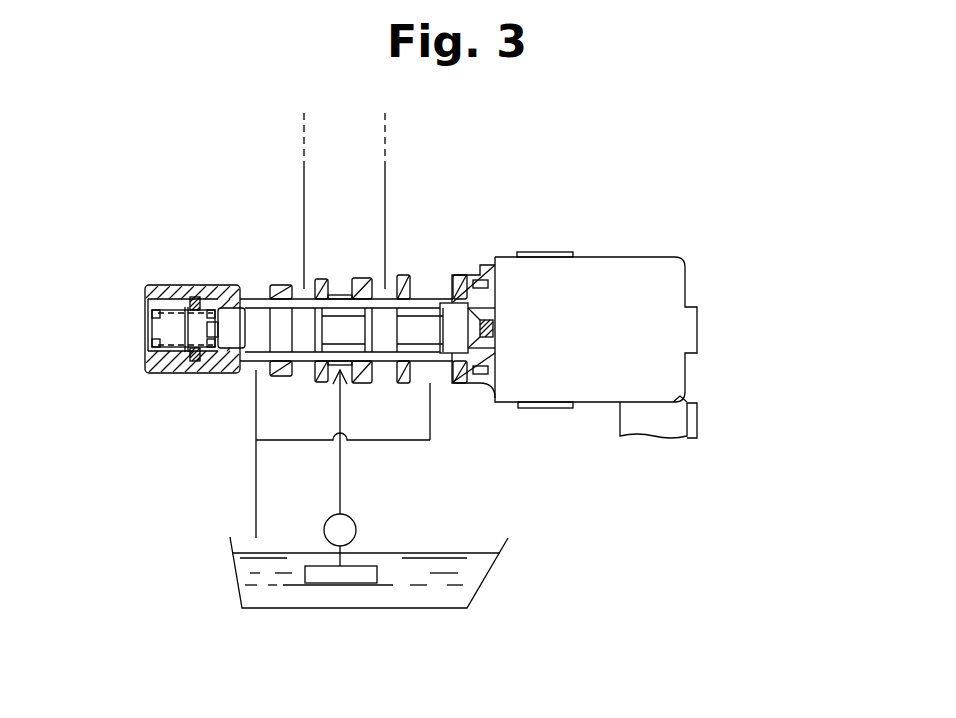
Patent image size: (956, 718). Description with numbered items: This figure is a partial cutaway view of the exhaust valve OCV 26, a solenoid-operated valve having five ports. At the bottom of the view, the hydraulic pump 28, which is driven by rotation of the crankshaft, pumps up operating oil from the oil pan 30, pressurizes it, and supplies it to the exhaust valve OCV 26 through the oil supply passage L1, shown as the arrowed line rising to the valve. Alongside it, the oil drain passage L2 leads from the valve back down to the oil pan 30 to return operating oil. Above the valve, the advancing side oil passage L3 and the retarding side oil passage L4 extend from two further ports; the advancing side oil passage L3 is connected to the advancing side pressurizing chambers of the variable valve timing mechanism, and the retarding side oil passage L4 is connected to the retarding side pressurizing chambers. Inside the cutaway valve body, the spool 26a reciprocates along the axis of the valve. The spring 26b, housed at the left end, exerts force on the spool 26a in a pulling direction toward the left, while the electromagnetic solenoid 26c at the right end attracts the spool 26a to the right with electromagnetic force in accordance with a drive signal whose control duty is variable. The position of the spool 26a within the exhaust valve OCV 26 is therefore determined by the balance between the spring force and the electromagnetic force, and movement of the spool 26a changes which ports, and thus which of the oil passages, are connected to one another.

The exhaust valve OCV 26 is at (592, 175).
The spool 26a is at (235, 315).
The spring 26b is at (145, 342).
The electromagnetic solenoid 26c is at (632, 257).
The oil supply passage L1 is at (338, 472).
The oil drain passage L2 is at (255, 488).
The advancing side oil passage L3 is at (386, 218).
The retarding side oil passage L4 is at (305, 218).
The hydraulic pump 28 is at (325, 528).
The oil pan 30 is at (487, 580).